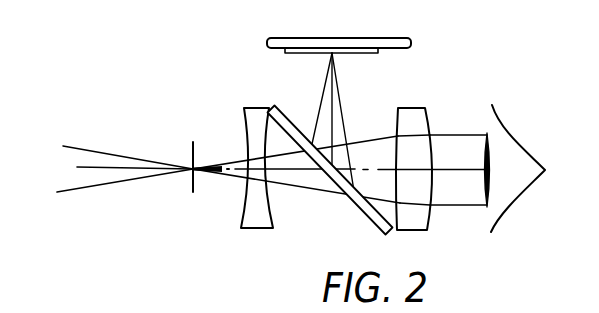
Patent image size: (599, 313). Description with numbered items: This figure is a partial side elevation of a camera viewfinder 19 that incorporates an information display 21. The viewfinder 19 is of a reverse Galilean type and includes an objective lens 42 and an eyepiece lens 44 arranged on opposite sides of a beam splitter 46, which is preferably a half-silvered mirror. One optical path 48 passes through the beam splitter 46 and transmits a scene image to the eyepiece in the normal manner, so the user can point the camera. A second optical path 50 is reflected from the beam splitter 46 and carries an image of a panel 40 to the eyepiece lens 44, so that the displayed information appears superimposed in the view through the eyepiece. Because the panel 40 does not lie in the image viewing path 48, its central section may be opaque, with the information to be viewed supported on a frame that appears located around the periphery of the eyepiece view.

The viewfinder 19 is at (163, 234).
The information display 21 is at (428, 47).
The panel 40 is at (298, 54).
The objective lens 42 is at (245, 132).
The eyepiece lens 44 is at (429, 121).
The beam splitter 46 is at (290, 119).
The optical path 48 is at (301, 172).
The optical path 50 is at (335, 113).